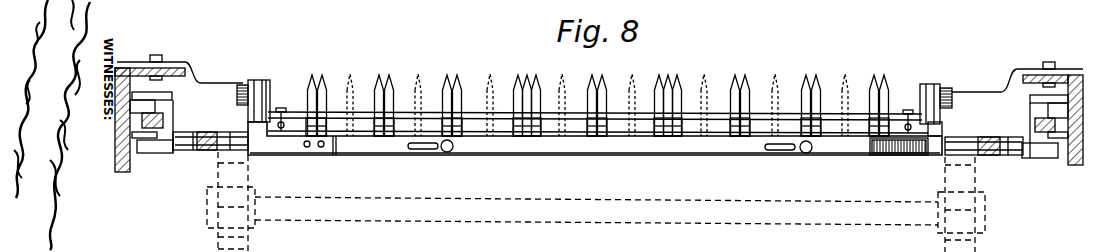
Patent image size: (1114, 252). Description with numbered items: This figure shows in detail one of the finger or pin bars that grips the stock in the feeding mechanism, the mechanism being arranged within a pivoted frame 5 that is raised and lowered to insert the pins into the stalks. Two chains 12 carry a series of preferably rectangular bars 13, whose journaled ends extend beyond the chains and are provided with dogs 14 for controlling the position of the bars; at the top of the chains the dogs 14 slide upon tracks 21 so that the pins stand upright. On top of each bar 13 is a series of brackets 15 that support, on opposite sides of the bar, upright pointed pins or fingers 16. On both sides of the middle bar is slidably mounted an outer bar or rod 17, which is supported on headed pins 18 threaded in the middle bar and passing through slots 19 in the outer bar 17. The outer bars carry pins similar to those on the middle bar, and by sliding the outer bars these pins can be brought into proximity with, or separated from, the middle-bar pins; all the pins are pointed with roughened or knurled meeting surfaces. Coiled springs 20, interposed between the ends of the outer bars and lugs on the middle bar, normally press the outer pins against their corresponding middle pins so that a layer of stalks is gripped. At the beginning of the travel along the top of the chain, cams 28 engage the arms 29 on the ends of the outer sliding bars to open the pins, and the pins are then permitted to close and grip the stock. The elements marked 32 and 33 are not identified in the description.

The frame 5 is at (120, 172).
The chains 12 is at (196, 132).
The bars 13 is at (570, 131).
The dogs 14 is at (165, 137).
The brackets 15 is at (596, 137).
The pointed pins or fingers 16 is at (518, 75).
The bar or rod 17 is at (542, 150).
The pins 18 is at (447, 152).
The slots 19 is at (420, 150).
The coiled springs 20 is at (899, 161).
The tracks 21 is at (164, 121).
The cams 28 is at (243, 85).
The arms 29 is at (265, 84).
The needles in alternate position 32 is at (422, 112).
The set screw 33 is at (283, 111).